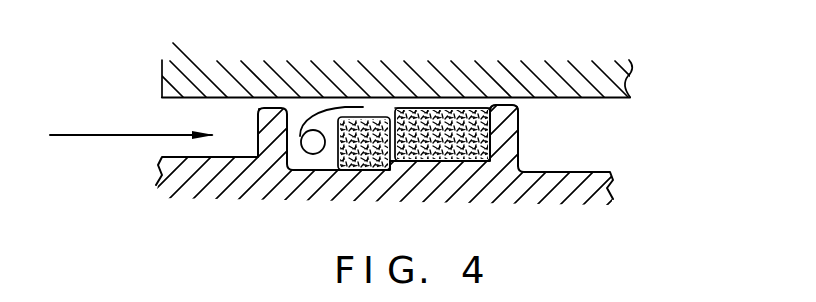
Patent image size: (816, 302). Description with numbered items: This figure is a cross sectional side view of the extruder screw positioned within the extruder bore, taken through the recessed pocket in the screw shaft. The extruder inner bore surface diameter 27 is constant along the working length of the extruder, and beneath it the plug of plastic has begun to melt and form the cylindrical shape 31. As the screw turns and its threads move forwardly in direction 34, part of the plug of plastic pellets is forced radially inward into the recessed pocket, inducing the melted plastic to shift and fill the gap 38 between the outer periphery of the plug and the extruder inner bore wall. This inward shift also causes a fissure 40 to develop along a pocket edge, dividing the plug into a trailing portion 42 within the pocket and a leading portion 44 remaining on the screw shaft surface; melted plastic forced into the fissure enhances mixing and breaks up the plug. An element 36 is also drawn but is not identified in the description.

The extruder inner bore surface diameter 27 is at (200, 98).
The cylindrical shape 31 is at (443, 116).
The direction 34 is at (75, 134).
The lower wall lip 36 is at (287, 167).
The gap 38 is at (375, 112).
The fissure 40 is at (393, 162).
The trailing portion 42 is at (362, 173).
The leading portion 44 is at (490, 124).